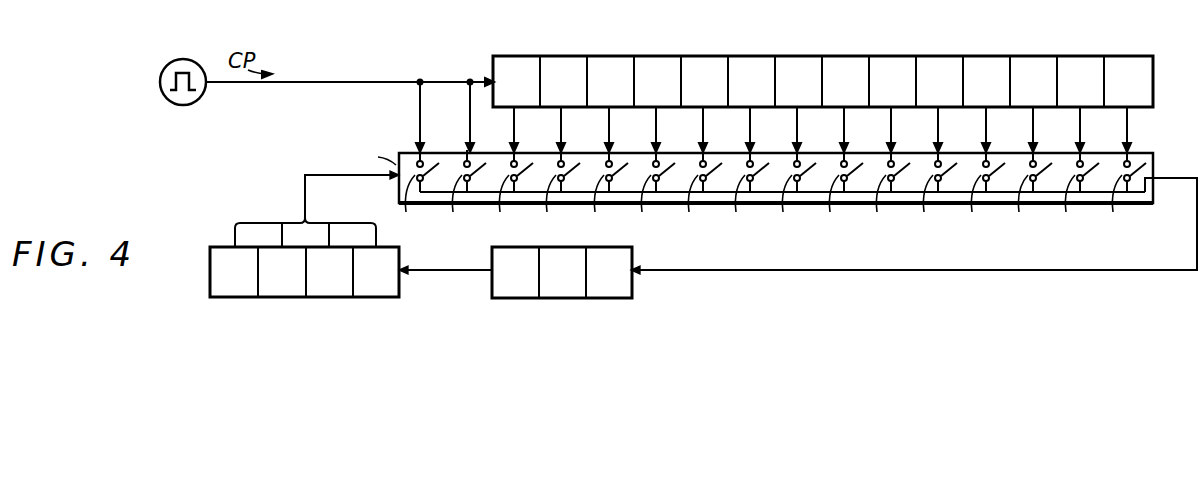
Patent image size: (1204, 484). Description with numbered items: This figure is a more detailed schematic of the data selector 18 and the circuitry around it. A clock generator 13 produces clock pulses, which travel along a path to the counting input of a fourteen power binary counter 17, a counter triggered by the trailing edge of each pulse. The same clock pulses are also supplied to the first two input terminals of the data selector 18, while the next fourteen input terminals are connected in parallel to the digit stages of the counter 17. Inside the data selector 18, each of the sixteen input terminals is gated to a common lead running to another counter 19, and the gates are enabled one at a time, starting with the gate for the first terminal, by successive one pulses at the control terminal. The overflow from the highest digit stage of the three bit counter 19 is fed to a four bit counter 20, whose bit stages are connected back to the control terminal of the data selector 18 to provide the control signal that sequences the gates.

The clock generator 13 is at (180, 105).
The fourteen power binary counter 17 is at (1153, 90).
The data selector 18 is at (1117, 208).
The counter 19 is at (617, 300).
The counter 20 is at (380, 298).